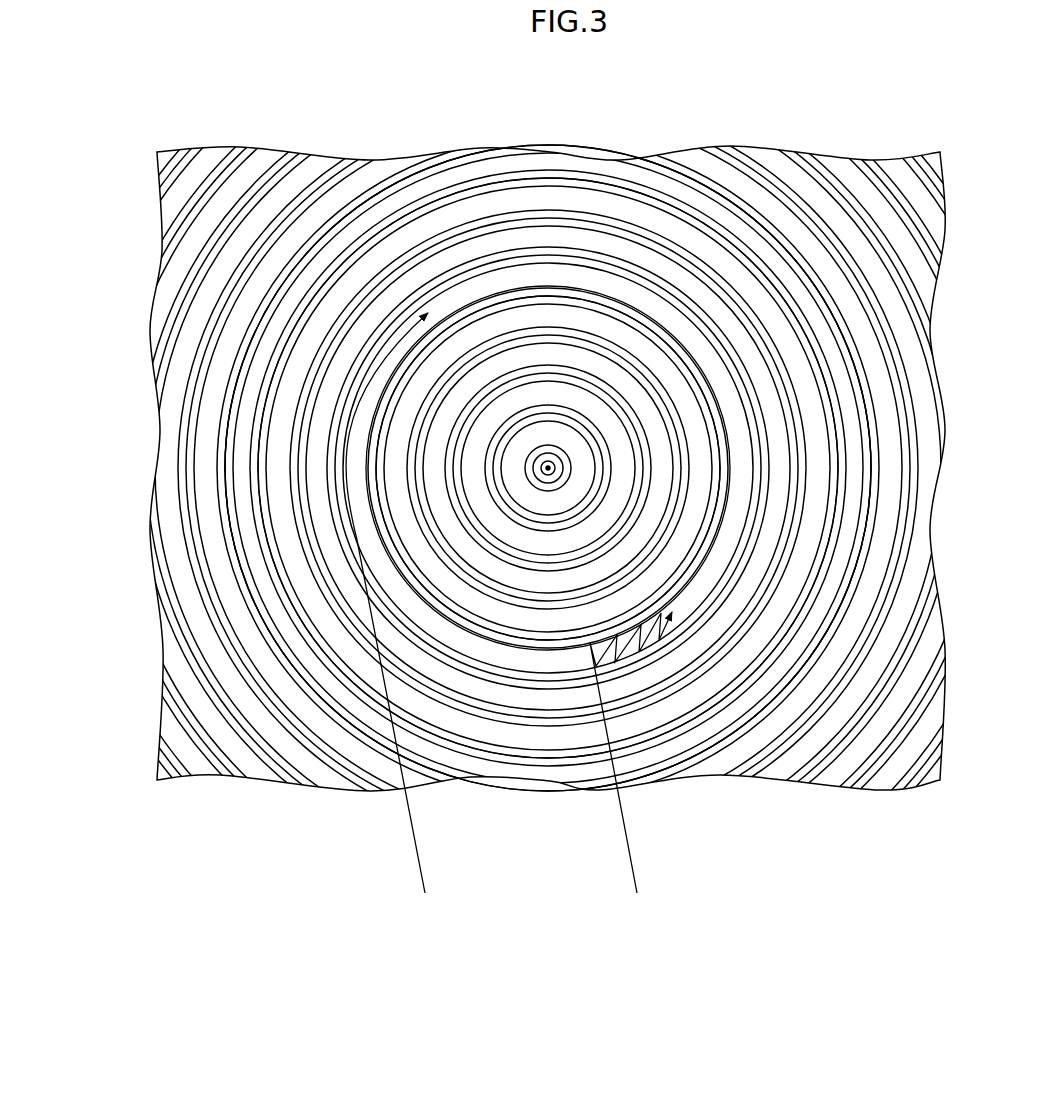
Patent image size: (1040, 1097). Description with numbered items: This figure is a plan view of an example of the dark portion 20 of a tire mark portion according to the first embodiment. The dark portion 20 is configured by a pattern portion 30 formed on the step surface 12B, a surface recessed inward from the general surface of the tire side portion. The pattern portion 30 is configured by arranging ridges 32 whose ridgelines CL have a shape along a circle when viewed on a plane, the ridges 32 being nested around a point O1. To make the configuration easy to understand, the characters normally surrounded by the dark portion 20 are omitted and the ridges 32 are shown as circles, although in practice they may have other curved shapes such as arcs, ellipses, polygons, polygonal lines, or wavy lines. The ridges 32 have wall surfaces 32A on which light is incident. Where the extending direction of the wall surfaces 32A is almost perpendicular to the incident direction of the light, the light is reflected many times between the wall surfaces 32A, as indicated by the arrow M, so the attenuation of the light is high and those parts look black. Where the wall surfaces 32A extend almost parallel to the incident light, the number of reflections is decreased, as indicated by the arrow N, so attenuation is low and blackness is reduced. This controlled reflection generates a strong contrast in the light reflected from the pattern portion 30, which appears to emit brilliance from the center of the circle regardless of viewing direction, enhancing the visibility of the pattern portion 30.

The dark portion 20 is at (951, 108).
The step surface 12B is at (900, 695).
The pattern portion 30 is at (815, 205).
The wall surfaces 32A is at (522, 290).
The ridges 32 is at (548, 468).
The ridgelines CL is at (800, 333).
The point O1 is at (548, 468).
The arrow N is at (412, 863).
The arrow M is at (627, 863).